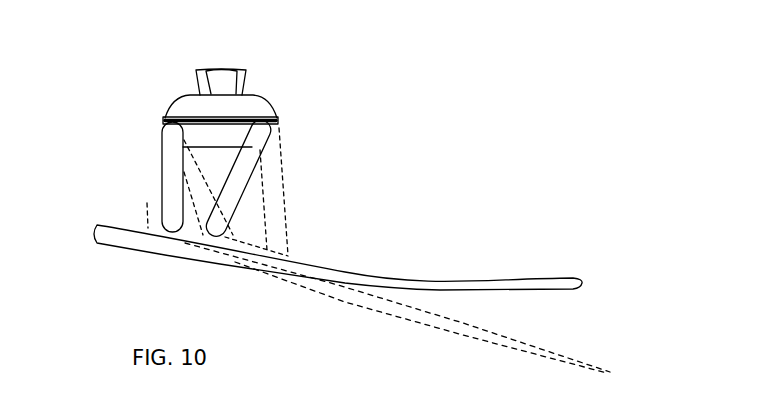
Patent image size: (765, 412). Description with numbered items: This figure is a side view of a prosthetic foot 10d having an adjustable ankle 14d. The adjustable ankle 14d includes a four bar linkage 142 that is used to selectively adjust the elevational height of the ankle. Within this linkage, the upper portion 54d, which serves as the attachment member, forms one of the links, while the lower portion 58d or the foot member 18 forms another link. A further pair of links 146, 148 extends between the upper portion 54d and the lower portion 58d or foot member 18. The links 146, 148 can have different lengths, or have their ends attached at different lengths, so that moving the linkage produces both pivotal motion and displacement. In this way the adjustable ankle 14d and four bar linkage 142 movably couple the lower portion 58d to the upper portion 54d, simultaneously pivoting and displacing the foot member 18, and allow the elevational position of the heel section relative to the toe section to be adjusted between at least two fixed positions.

The prosthetic foot 10d is at (350, 231).
The adjustable ankle 14d is at (125, 154).
The foot member 18 is at (430, 275).
The upper portion 54d is at (280, 133).
The lower portion 58d is at (157, 231).
The four bar linkage 142 is at (308, 171).
The link 146 is at (160, 156).
The link 148 is at (243, 205).